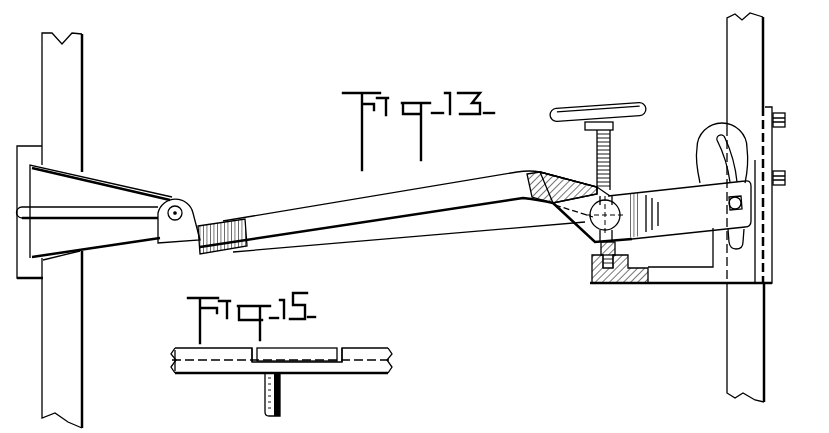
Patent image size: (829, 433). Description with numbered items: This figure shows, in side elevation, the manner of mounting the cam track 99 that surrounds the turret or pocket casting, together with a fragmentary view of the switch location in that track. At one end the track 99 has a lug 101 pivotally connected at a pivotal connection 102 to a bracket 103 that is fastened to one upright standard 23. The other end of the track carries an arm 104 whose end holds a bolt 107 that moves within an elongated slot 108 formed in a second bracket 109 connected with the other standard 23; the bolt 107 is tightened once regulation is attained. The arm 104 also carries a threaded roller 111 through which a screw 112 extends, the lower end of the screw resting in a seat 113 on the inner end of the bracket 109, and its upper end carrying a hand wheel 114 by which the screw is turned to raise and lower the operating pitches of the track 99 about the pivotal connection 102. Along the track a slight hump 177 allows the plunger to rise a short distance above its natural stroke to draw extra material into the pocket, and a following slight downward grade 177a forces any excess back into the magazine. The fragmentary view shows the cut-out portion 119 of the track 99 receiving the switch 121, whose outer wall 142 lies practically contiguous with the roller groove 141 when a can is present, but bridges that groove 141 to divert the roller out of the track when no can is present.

In FIG. 13, the upright standard 23 is at (403, 220).
In FIG. 13, the track 99 is at (325, 212).
In FIG. 15, the track 99 is at (367, 352).
In FIG. 13, the lug 101 is at (177, 240).
In FIG. 13, the pivotal connection 102 is at (178, 202).
In FIG. 13, the bracket 103 is at (108, 187).
In FIG. 13, the arm 104 is at (667, 185).
In FIG. 13, the bolt 107 is at (728, 208).
In FIG. 13, the elongated slot 108 is at (712, 143).
In FIG. 13, the bracket 109 is at (660, 283).
In FIG. 13, the threaded roller 111 is at (593, 228).
In FIG. 13, the screw 112 is at (612, 168).
In FIG. 13, the seat 113 is at (607, 280).
In FIG. 13, the hand wheel 114 is at (645, 108).
In FIG. 13, the hump 177 is at (522, 173).
In FIG. 13, the downward grade 177a is at (550, 175).
In FIG. 15, the cut-out portion 119 is at (340, 365).
In FIG. 15, the switch 121 is at (318, 347).
In FIG. 15, the groove 141 is at (183, 353).
In FIG. 15, the outer wall 142 is at (270, 355).